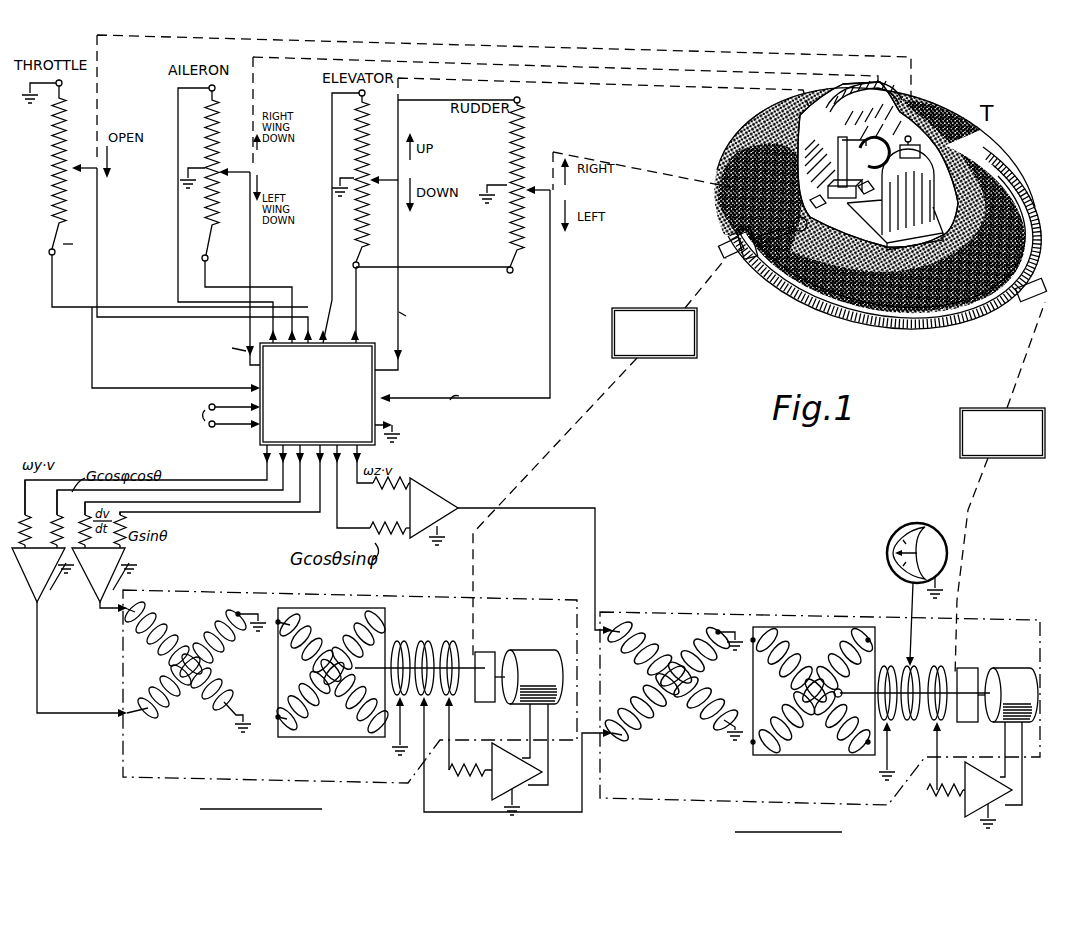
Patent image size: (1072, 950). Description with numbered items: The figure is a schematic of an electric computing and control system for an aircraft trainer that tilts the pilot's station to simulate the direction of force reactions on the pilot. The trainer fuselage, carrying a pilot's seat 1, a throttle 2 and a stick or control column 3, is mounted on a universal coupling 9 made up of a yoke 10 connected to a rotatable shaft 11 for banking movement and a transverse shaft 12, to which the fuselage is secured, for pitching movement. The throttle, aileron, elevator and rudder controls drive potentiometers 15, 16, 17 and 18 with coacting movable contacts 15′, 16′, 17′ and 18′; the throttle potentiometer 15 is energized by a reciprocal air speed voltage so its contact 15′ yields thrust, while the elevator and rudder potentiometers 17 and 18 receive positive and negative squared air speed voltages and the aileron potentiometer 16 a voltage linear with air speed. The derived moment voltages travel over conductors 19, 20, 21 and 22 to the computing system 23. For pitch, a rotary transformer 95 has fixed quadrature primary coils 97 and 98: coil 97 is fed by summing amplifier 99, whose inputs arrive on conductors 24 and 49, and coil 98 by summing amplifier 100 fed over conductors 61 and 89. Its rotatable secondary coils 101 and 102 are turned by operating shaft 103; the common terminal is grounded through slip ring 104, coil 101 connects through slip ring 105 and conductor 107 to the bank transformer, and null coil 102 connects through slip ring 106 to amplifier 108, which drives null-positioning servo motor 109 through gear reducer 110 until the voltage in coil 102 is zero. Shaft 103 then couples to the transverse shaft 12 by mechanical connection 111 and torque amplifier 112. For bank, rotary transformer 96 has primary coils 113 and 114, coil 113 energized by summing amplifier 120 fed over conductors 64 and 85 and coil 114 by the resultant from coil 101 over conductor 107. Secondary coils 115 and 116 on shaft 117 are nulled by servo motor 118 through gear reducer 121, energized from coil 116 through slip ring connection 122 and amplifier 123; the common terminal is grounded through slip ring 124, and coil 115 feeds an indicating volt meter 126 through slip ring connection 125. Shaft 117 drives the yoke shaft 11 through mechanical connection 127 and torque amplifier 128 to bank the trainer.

The pilot's seat 1 is at (930, 208).
The throttle 2 is at (910, 137).
The stick or control column 3 is at (870, 158).
The universal coupling 9 is at (956, 342).
The yoke 10 is at (860, 290).
The rotatable shaft 11 is at (1040, 292).
The transverse shaft 12 is at (735, 244).
The throttle potentiometer 15 is at (54, 174).
The movable contact of throttle potentiometer 15′ is at (73, 172).
The aileron potentiometer 16 is at (218, 150).
The movable contact of aileron potentiometer 16′ is at (228, 175).
The elevator potentiometer 17 is at (370, 159).
The movable contact of elevator potentiometer 17′ is at (380, 182).
The rudder potentiometer 18 is at (523, 140).
The movable contact of rudder potentiometer 18′ is at (531, 194).
The conductor 19 is at (92, 355).
The conductor 20 is at (250, 250).
The conductor 21 is at (398, 284).
The conductor 22 is at (553, 300).
The computing system 23 is at (432, 389).
The conductor 24 is at (237, 516).
The conductor 49 is at (288, 516).
The conductor 61 is at (258, 472).
The conductor 64 is at (366, 455).
The conductor 85 is at (370, 528).
The conductor 89 is at (225, 482).
The rotary transformer 95 is at (328, 592).
The rotary transformer 96 is at (788, 611).
The fixed primary coil 97 is at (158, 634).
The fixed primary coil 98 is at (150, 700).
The summing amplifier 99 is at (104, 580).
The summing amplifier 100 is at (63, 632).
The secondary coil 101 is at (306, 641).
The secondary coil 102 is at (306, 694).
The operating shaft 103 is at (348, 676).
The slip ring 104 is at (402, 640).
The slip ring 105 is at (428, 640).
The slip ring 106 is at (470, 645).
The conductor 107 is at (424, 811).
The amplifier 108 is at (490, 795).
The null-positioning servo motor 109 is at (557, 651).
The gear reducer 110 is at (500, 641).
The mechanical connection 111 is at (588, 421).
The torque amplifier 112 is at (660, 358).
The primary coil 113 is at (640, 640).
The primary coil 114 is at (641, 692).
The secondary coil 115 is at (768, 681).
The secondary coil 116 is at (768, 710).
The shaft 117 is at (830, 698).
The servo-positioning motor 118 is at (1030, 668).
The summing amplifier 120 is at (427, 493).
The gear reducer 121 is at (985, 658).
The slip ring connection 122 is at (940, 726).
The amplifier 123 is at (963, 803).
The slip ring 124 is at (890, 730).
The slip ring connection 125 is at (915, 668).
The indicating volt meter 126 is at (935, 517).
The mechanical connection 127 is at (985, 483).
The torque amplifier 128 is at (960, 437).